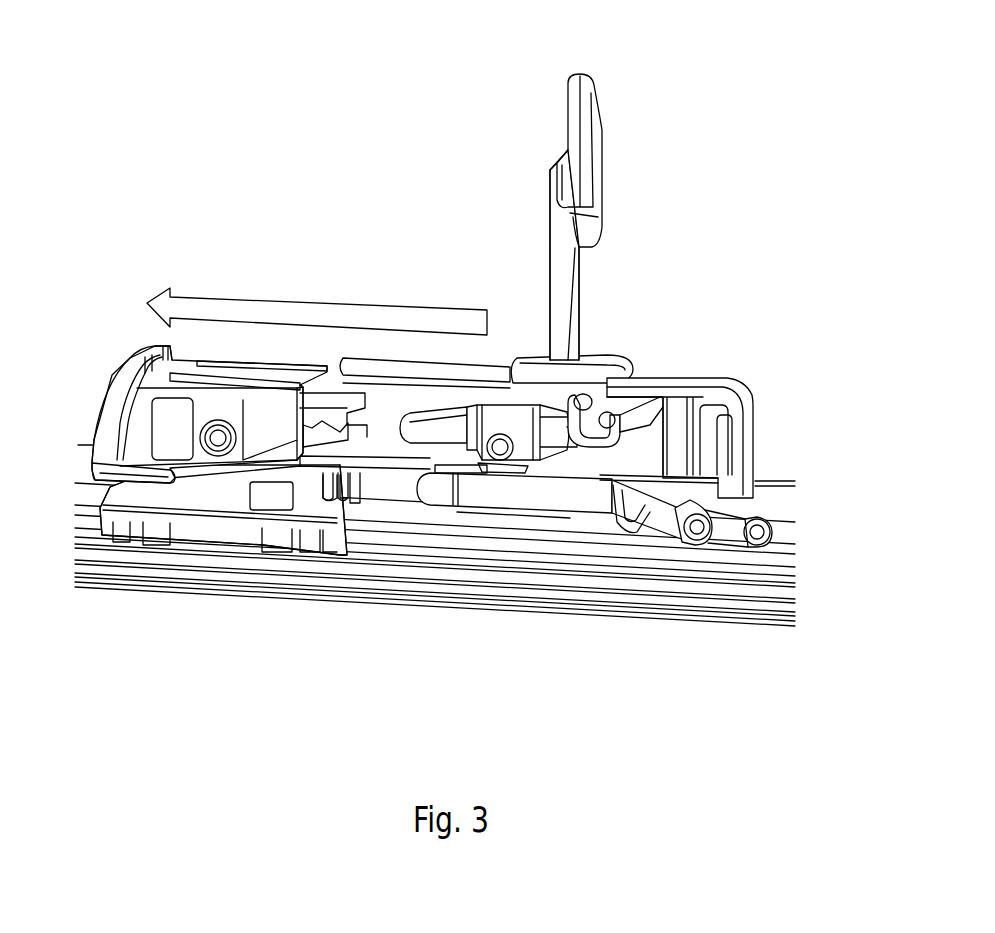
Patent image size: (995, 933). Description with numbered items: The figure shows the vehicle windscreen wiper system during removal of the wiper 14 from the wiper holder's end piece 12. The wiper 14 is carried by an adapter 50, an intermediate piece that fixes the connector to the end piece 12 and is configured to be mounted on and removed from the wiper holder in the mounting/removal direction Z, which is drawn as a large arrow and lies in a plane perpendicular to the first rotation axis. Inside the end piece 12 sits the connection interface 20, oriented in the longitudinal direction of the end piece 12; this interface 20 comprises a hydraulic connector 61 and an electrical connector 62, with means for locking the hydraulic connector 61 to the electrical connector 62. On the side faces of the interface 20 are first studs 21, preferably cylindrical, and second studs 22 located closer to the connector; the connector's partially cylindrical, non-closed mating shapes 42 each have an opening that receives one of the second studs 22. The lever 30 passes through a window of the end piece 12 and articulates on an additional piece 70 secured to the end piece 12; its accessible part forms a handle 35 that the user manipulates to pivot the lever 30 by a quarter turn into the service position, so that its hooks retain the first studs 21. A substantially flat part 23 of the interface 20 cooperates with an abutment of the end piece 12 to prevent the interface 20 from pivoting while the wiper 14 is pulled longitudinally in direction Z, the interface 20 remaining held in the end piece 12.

The end piece 12 is at (758, 402).
The wiper 14 is at (85, 443).
The connection interface 20 is at (415, 492).
The first studs 21 is at (607, 423).
The second studs 22 is at (502, 443).
The substantially flat part 23 is at (667, 398).
The lever 30 is at (546, 250).
The handle 35 is at (603, 113).
The mating shapes 42 is at (345, 403).
The adapter 50 is at (108, 390).
The hydraulic connector 61 is at (523, 493).
The electrical connector 62 is at (432, 433).
The additional piece 70 is at (603, 352).
The mounting/removal direction Z is at (360, 305).